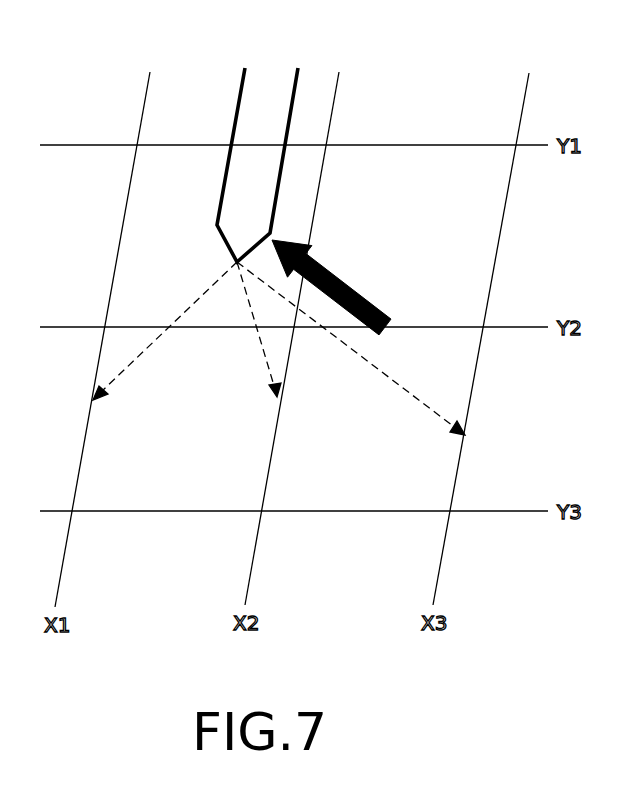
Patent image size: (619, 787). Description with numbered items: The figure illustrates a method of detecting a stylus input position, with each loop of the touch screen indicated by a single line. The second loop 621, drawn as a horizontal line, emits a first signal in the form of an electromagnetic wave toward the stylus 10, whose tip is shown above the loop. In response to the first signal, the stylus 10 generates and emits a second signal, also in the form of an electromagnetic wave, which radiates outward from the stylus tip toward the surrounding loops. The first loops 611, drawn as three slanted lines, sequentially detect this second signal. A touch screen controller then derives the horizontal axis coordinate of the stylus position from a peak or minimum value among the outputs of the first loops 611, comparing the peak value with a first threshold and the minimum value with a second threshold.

The stylus 10 is at (297, 83).
The first loop 611 is at (253, 562).
The second loop 621 is at (522, 327).